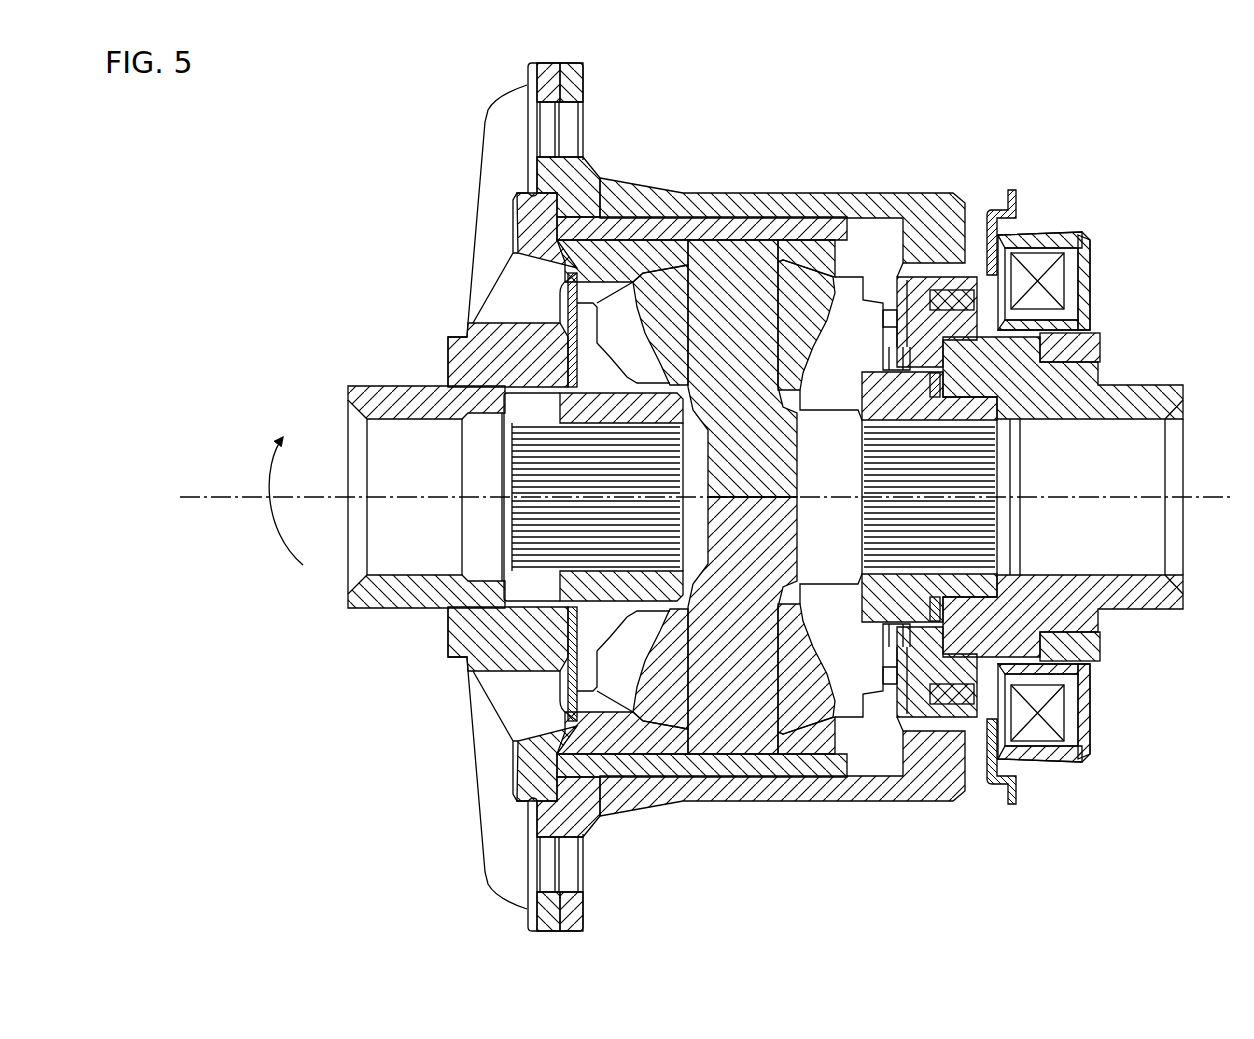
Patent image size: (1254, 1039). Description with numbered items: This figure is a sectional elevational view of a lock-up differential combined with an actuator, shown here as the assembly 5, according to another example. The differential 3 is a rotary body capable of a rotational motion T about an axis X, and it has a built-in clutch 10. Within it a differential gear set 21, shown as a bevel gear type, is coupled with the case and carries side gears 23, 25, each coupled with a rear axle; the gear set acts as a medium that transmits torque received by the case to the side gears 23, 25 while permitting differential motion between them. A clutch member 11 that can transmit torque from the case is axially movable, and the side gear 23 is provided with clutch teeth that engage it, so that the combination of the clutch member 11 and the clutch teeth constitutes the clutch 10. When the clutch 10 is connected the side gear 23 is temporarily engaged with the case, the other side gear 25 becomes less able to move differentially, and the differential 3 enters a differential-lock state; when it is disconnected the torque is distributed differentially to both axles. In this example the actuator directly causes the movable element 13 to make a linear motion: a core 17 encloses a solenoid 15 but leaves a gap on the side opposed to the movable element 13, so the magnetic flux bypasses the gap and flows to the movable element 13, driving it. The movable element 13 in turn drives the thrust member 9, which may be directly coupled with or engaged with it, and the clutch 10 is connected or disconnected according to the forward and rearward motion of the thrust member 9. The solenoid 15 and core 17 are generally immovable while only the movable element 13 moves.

The differential 3 is at (706, 128).
The rotation sensor unit 5 is at (1062, 210).
The thrust member 9 is at (1045, 365).
The clutch 10 is at (881, 290).
The clutch member 11 is at (925, 276).
The movable element 13 is at (1065, 362).
The solenoid 15 is at (1050, 275).
The core 17 is at (1090, 255).
The differential gear set 21 is at (790, 187).
The side gear 23 is at (890, 705).
The side gear 25 is at (607, 690).
The rotational motion T is at (290, 388).
The axis X is at (228, 475).